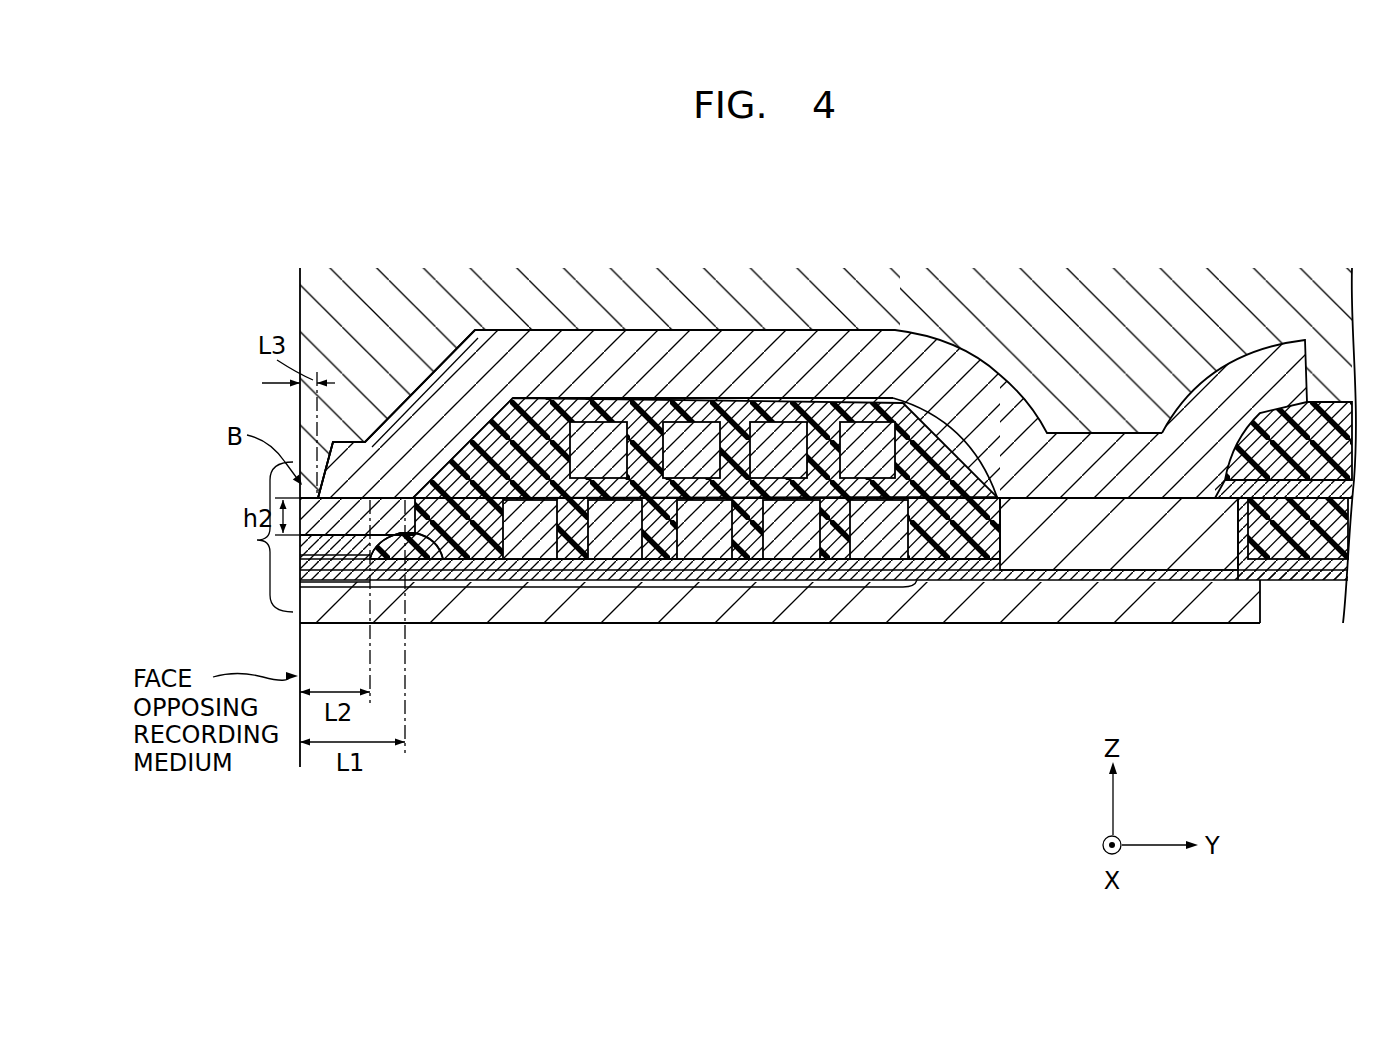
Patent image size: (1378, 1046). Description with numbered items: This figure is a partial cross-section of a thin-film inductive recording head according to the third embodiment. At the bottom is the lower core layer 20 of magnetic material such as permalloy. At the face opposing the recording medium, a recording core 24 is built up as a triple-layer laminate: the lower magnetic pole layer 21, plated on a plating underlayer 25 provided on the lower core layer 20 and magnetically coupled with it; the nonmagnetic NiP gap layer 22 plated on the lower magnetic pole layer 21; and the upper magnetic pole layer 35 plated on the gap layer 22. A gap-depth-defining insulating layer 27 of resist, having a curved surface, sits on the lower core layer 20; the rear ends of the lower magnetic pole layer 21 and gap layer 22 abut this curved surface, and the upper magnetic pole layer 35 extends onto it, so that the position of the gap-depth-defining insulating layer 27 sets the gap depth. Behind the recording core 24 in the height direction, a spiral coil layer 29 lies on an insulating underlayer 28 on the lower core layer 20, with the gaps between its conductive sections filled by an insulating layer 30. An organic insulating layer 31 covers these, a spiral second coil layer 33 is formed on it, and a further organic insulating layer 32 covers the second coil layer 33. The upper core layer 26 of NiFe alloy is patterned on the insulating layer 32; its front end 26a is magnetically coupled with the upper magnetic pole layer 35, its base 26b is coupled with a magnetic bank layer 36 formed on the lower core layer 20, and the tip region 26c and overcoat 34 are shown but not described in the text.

The lower core layer 20 is at (1200, 617).
The lower magnetic pole layer 21 is at (330, 566).
The gap layer 22 is at (330, 559).
The recording core 24 is at (228, 537).
The plating underlayer 25 is at (343, 610).
The upper core layer 26 is at (1220, 395).
The front end of the upper core layer 26a is at (350, 442).
The base of the upper core layer 26b is at (1118, 478).
The pole tip end 26c is at (303, 492).
The gap-depth-defining insulating layer 27 is at (412, 556).
The insulating underlayer 28 is at (518, 577).
The coil layer 29 is at (690, 575).
The insulating layer 30 is at (500, 530).
The insulating layer 31 is at (950, 455).
The insulating layer 32 is at (925, 487).
The second coil layer 33 is at (710, 395).
The protective overcoat 34 is at (430, 290).
The upper magnetic pole layer 35 is at (300, 507).
The bank layer 36 is at (1077, 540).